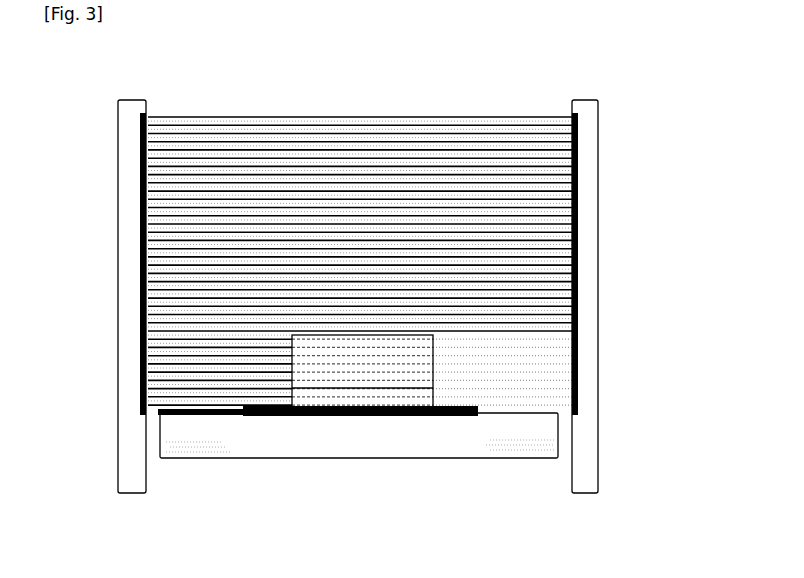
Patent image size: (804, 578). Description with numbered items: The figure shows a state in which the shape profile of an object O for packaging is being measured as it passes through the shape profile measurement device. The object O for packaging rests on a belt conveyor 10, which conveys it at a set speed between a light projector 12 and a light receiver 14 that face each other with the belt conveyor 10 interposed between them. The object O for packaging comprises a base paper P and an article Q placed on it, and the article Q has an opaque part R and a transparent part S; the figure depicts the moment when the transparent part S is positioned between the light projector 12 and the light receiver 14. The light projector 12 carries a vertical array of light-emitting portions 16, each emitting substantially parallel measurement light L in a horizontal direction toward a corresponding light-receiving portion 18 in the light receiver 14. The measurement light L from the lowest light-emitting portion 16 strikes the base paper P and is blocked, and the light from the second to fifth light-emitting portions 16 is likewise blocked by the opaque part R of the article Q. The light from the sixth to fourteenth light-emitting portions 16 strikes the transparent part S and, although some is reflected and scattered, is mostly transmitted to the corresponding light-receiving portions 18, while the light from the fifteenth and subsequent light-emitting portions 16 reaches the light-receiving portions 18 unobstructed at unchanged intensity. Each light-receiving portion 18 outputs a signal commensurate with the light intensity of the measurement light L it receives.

The belt conveyor 10 is at (240, 435).
The light projector 12 is at (118, 116).
The light receiver 14 is at (598, 113).
The light-emitting portions 16 is at (140, 200).
The light-receiving portions 18 is at (578, 200).
The measurement light L is at (326, 115).
The object for packaging O is at (360, 443).
The base paper P is at (434, 420).
The article Q is at (362, 397).
The opaque part R is at (299, 397).
The transparent part S is at (333, 372).